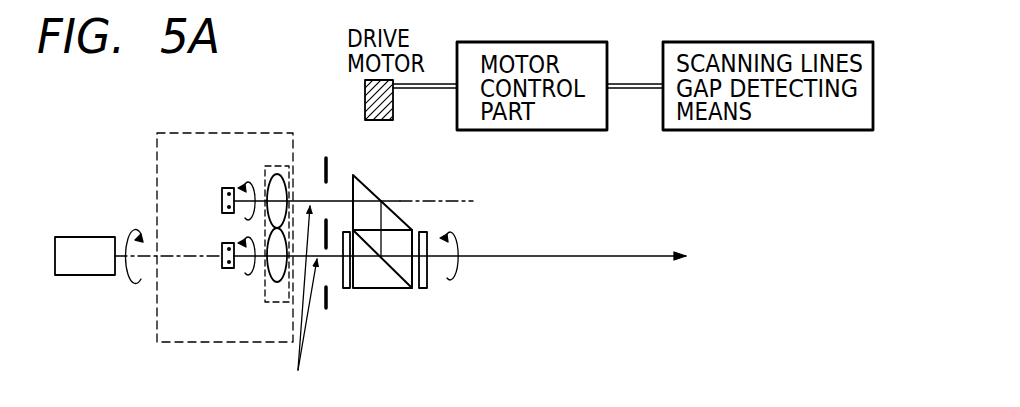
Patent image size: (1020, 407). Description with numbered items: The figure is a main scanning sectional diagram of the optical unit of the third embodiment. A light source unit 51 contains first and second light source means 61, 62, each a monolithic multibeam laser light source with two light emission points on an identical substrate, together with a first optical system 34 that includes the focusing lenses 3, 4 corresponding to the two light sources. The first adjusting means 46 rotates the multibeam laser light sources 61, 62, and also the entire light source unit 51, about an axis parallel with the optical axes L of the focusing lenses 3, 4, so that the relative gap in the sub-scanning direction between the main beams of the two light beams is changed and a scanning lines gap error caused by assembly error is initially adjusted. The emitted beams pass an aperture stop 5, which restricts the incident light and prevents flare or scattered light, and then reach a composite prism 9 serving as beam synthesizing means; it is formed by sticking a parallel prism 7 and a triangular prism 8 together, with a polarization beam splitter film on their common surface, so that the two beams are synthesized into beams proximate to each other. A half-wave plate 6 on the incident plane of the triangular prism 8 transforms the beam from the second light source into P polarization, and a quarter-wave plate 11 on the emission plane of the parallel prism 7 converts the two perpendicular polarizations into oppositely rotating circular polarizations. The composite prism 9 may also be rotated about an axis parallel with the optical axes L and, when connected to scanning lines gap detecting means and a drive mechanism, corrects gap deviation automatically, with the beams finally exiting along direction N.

The first adjusting means 46 is at (85, 277).
The light source unit 51 is at (194, 131).
The first optical system 34 is at (273, 165).
The first light source means 61 is at (222, 195).
The second light source means 62 is at (223, 268).
The focusing lens 3 is at (268, 182).
The focusing lens 4 is at (277, 283).
The aperture stop 5 is at (326, 156).
The optical axes L is at (305, 304).
The composite prism 9 is at (375, 186).
The parallel prism 7 is at (392, 230).
The triangular prism 8 is at (398, 289).
The half-wave plate 6 is at (344, 290).
The quarter-wave plate 11 is at (427, 289).
The optical axis direction N is at (530, 256).